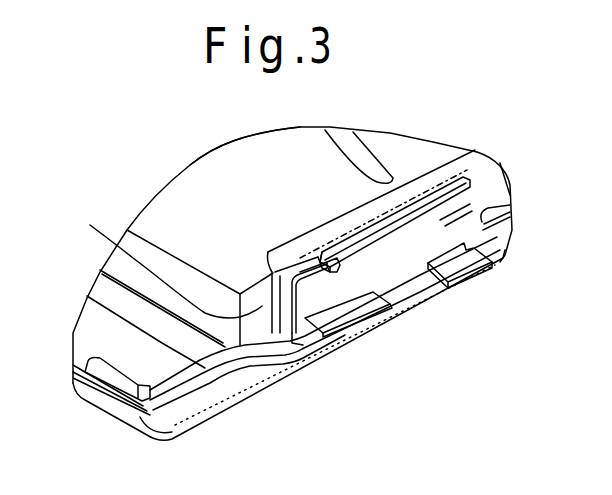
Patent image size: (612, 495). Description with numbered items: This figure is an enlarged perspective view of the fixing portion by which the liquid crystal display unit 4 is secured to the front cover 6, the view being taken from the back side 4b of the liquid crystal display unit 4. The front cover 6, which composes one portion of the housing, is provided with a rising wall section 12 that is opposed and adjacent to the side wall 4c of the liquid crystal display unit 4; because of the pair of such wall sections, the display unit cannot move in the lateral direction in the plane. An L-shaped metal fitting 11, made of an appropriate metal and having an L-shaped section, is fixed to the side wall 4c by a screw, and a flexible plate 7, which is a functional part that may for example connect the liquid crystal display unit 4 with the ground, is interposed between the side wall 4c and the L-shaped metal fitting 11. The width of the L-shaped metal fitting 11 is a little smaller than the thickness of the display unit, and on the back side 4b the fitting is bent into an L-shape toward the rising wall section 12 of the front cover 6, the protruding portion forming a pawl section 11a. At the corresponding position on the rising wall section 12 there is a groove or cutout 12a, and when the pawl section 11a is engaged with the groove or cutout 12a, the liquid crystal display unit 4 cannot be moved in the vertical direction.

The liquid crystal display unit 4 is at (292, 283).
The back side 4b is at (279, 201).
The side wall 4c is at (161, 259).
The front cover 6 is at (385, 332).
The flexible plate 7 is at (422, 177).
The L-shaped metal fitting 11 is at (365, 268).
The pawl section 11a is at (344, 270).
The rising wall section 12 is at (308, 312).
The groove or cutout 12a is at (334, 274).